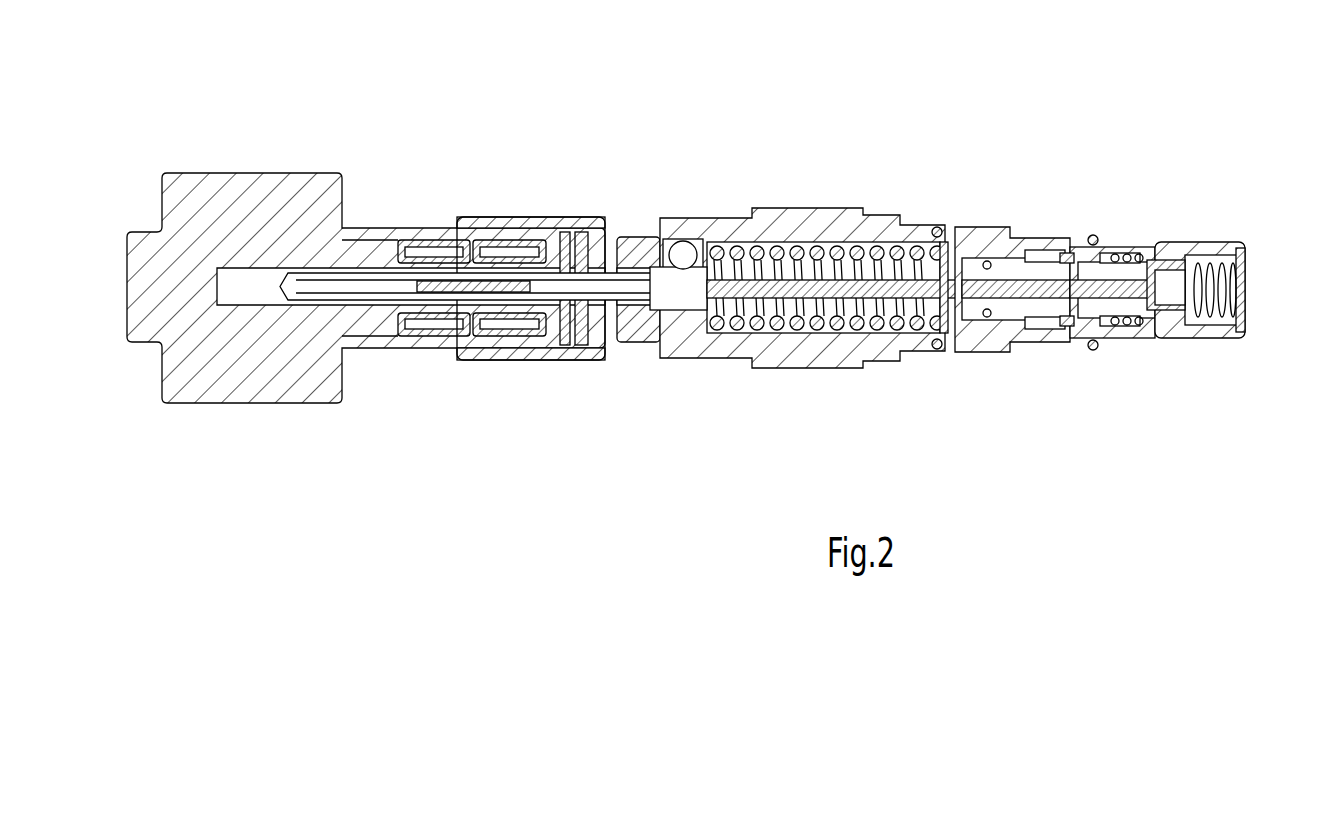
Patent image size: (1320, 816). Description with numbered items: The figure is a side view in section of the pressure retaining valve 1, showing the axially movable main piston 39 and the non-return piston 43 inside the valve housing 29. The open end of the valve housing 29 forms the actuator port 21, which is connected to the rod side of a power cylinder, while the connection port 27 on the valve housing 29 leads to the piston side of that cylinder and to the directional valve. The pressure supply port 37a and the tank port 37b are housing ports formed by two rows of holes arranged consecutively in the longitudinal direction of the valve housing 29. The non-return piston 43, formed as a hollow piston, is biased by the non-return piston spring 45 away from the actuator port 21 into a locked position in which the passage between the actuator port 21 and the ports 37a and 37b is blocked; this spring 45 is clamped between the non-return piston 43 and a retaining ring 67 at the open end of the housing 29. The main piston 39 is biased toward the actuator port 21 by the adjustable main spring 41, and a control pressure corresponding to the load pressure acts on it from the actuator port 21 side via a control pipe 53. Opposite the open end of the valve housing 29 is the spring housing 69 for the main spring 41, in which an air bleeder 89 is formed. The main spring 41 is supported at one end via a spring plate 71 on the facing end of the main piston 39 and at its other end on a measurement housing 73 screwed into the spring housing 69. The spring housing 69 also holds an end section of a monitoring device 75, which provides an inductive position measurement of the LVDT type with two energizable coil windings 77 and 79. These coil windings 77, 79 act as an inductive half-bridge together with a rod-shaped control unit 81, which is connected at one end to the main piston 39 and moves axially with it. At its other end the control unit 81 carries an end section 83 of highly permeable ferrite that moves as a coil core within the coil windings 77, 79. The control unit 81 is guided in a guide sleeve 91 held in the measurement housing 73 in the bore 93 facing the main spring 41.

The pressure retaining valve 1 is at (706, 359).
The actuator port 21 is at (1245, 270).
The connection port 27 is at (1068, 340).
The valve housing 29 is at (1068, 240).
The pressure supply port 37a is at (1170, 340).
The tank port 37b is at (1140, 245).
The main piston 39 is at (1035, 240).
The main spring 41 is at (805, 212).
The non-return piston 43 is at (1175, 245).
The non-return piston spring 45 is at (1225, 245).
The control pipe 53 is at (1105, 235).
The retaining ring 67 is at (1262, 345).
The spring housing 69 is at (807, 350).
The spring plate 71 is at (952, 340).
The measurement housing 73 is at (518, 222).
The monitoring device 75 is at (448, 208).
The coil winding 77 is at (407, 345).
The coil winding 79 is at (505, 345).
The rod-shaped control unit 81 is at (667, 318).
The end section 83 is at (440, 275).
The air bleeder 89 is at (912, 250).
The guide sleeve 91 is at (612, 230).
The bore 93 is at (700, 230).